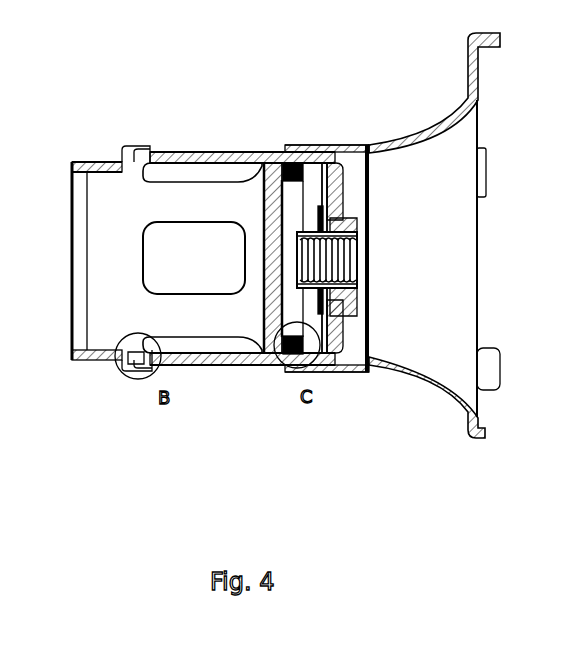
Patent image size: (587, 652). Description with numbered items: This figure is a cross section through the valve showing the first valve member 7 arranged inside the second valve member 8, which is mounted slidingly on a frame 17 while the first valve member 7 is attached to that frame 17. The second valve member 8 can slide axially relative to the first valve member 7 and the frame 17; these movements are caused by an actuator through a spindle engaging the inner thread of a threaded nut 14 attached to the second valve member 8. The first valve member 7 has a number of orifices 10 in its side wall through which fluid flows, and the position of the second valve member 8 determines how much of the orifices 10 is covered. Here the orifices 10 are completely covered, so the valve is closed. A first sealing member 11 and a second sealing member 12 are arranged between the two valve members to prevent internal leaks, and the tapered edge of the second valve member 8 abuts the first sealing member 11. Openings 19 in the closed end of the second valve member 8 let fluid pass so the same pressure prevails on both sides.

The first valve member 7 is at (108, 161).
The second valve member 8 is at (253, 357).
The orifices 10 is at (208, 240).
The first sealing member 11 is at (136, 148).
The second sealing member 12 is at (298, 164).
The threaded nut 14 is at (350, 288).
The frame 17 is at (412, 383).
The openings 19 is at (335, 326).